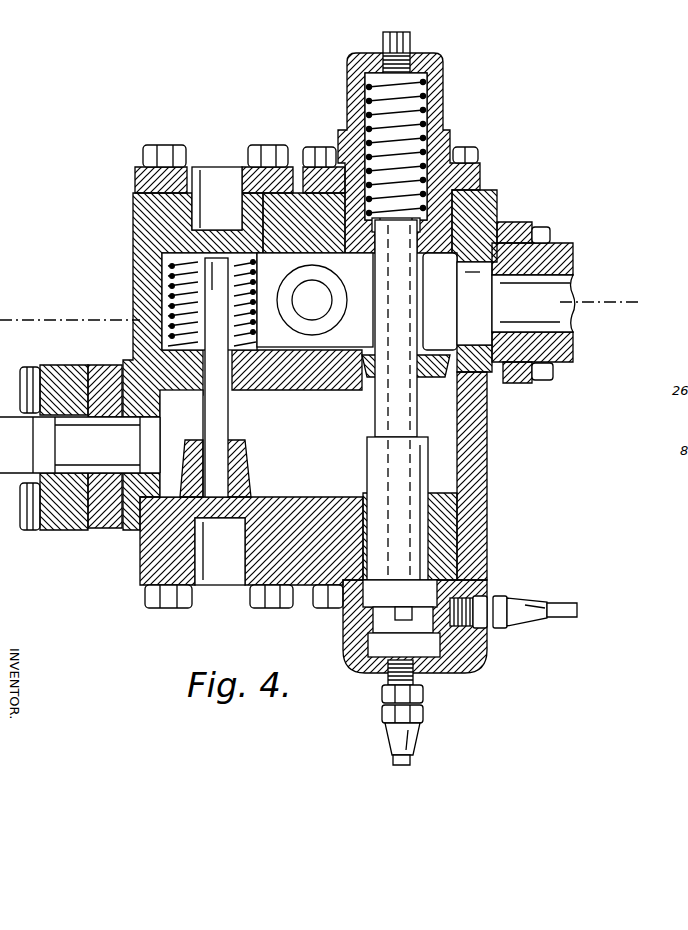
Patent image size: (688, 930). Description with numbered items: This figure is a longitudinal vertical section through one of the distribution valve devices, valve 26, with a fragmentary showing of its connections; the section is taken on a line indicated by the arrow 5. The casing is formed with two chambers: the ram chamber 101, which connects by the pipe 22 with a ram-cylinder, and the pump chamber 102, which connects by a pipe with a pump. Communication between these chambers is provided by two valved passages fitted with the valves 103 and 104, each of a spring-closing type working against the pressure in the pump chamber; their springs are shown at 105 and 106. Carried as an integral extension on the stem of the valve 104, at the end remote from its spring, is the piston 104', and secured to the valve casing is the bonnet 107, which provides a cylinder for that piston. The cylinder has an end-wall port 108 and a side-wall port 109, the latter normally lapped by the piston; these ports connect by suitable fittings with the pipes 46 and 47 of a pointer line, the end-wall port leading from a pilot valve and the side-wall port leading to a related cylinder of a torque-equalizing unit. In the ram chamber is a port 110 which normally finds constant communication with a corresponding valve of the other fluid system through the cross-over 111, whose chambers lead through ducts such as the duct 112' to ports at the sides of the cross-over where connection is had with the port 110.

The ram chamber 101 is at (165, 300).
The pump chamber 102 is at (458, 441).
The valve 103 is at (199, 390).
The valve 104 is at (408, 328).
The piston 104' is at (379, 522).
The spring 105 is at (178, 278).
The spring 106 is at (423, 100).
The bonnet 107 is at (457, 666).
The end-wall port 108 is at (404, 632).
The side-wall port 109 is at (447, 617).
The port 110 is at (473, 304).
The cross-over 111 is at (554, 247).
The duct 112' is at (566, 312).
The pipe 22 is at (328, 295).
The valve 26 is at (124, 538).
The pipe 46 is at (410, 762).
The pipe 47 is at (563, 607).
The section line 5 is at (633, 320).